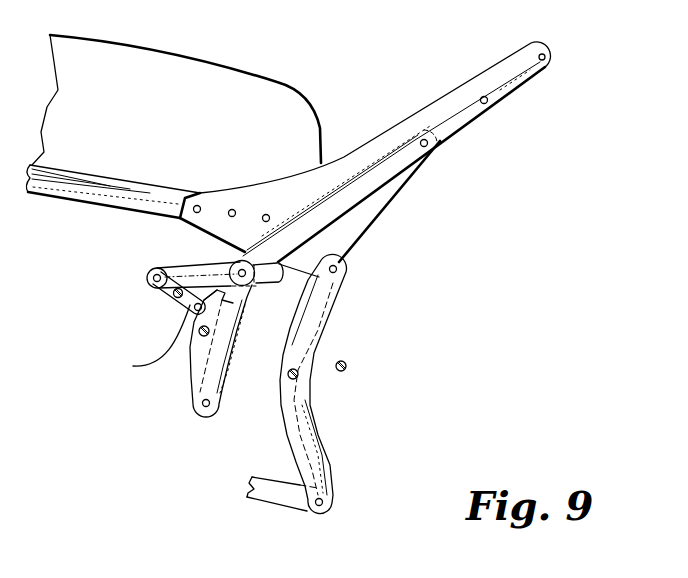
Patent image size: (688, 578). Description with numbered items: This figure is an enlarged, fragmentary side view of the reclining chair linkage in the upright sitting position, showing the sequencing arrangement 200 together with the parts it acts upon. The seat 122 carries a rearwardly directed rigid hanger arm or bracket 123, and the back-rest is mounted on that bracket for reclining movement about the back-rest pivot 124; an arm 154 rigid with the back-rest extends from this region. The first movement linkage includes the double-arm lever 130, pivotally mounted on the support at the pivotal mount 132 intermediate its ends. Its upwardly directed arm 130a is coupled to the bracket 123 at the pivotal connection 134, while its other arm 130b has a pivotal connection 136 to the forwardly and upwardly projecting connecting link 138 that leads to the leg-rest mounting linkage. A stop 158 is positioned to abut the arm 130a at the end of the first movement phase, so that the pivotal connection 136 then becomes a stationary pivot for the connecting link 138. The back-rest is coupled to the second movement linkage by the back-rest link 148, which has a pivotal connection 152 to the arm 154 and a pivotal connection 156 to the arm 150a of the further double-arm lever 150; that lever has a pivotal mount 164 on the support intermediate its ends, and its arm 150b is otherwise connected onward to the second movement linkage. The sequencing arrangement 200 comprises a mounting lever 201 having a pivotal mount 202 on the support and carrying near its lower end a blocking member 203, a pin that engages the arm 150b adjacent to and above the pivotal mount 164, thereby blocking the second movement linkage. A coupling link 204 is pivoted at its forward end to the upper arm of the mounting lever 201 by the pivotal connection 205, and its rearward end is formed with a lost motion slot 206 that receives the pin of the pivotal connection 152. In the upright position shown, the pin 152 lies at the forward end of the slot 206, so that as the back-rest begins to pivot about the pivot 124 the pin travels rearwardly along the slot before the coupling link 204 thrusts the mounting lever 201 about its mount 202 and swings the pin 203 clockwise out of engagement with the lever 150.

The seat 122 is at (240, 57).
The hanger arm or bracket 123 is at (392, 198).
The back-rest pivot 124 is at (422, 141).
The bracket or arm 154 is at (462, 132).
The pivotal connection 134 is at (347, 269).
The double-arm lever 130 is at (348, 391).
The upwardly directed arm 130a is at (325, 328).
The arm 130b is at (330, 468).
The pivotal mount 132 is at (298, 375).
The pivotal connection 136 is at (330, 504).
The connecting link 138 is at (273, 507).
The stop 158 is at (349, 366).
The pivotal connection 152 is at (236, 268).
The coupling link 204 is at (172, 264).
The pivotal connection 205 is at (148, 275).
The lost motion slot 206 is at (258, 284).
The sequencing arrangement 200 is at (136, 326).
The mounting lever 201 is at (166, 298).
The pivotal mount 202 is at (192, 310).
The blocking member 203 is at (143, 290).
The double-arm lever 150 is at (214, 366).
The arm 150a is at (194, 393).
The arm 150b is at (232, 322).
The back-rest link 148 is at (229, 357).
The pivotal connection 156 is at (210, 404).
The pivotal mount 164 is at (205, 333).